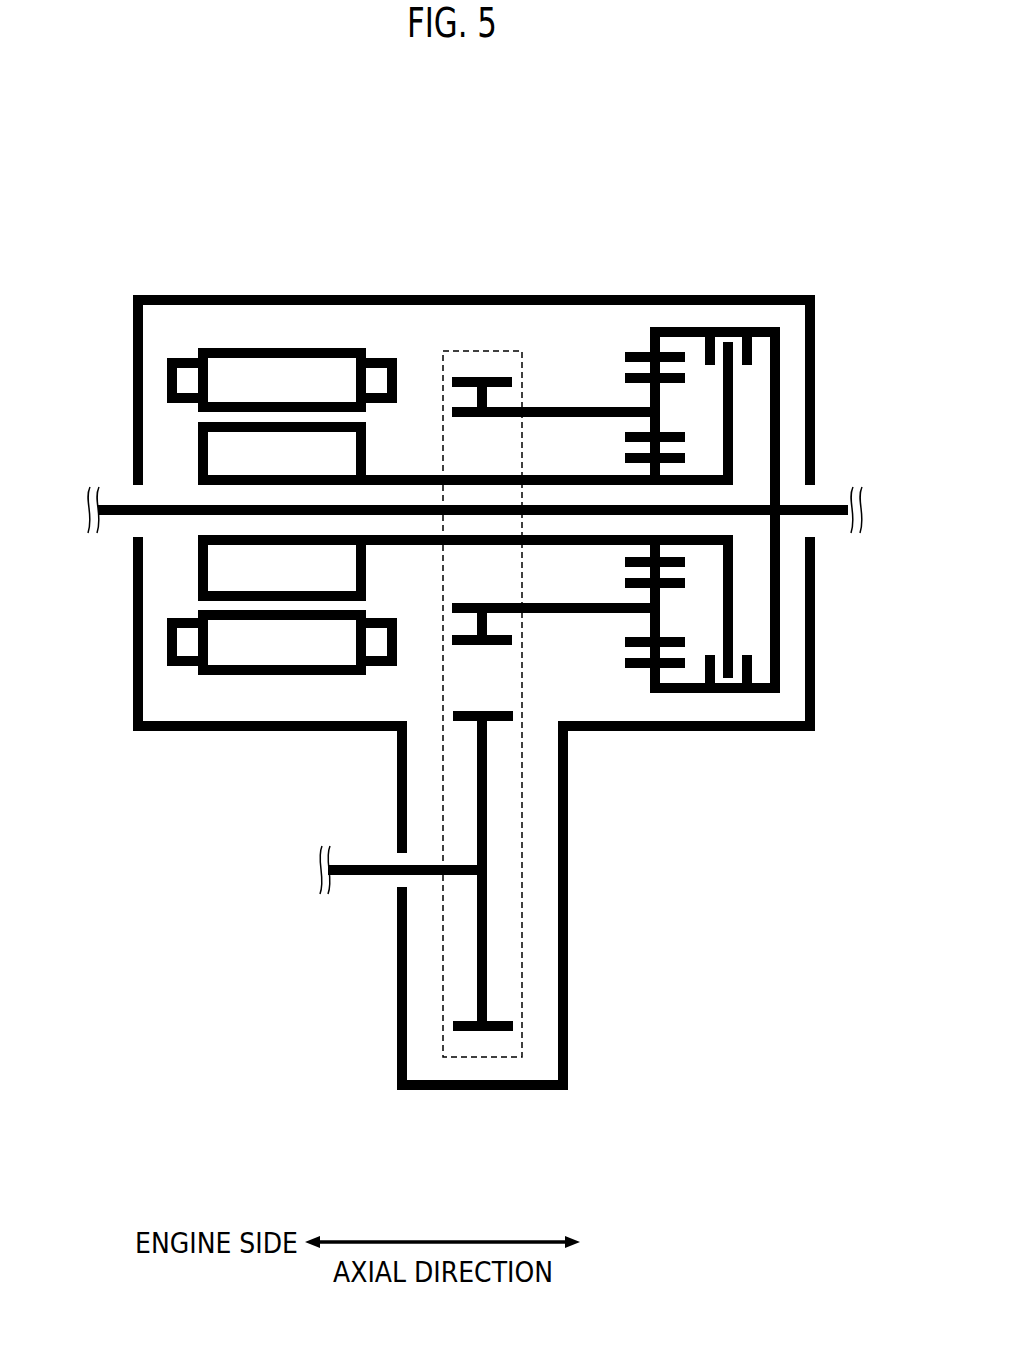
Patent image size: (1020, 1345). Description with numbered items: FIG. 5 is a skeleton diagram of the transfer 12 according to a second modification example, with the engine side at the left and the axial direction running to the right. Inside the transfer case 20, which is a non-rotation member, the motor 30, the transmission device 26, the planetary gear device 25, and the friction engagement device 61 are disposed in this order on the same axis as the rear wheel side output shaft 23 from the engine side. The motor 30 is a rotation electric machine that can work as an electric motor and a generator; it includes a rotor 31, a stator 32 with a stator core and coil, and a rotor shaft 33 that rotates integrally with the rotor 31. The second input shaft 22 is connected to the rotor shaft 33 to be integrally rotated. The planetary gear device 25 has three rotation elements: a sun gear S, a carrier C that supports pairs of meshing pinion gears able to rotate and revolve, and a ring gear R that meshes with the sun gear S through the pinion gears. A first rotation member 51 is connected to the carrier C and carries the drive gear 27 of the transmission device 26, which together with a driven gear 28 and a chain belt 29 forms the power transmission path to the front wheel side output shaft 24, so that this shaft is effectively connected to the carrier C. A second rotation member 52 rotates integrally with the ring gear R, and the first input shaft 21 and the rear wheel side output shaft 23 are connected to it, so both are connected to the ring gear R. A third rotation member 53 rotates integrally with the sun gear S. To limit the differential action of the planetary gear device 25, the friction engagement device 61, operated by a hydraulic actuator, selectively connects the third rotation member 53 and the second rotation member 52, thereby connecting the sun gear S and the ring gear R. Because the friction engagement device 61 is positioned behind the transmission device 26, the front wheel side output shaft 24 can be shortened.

The transfer 12 is at (222, 200).
The transfer case 20 is at (173, 295).
The first input shaft 21 is at (118, 518).
The second input shaft 22 is at (565, 475).
The rear wheel side output shaft 23 is at (828, 518).
The front wheel side output shaft 24 is at (352, 876).
The planetary gear device 25 is at (677, 280).
The transmission device 26 is at (480, 325).
The drive gear 27 is at (462, 377).
The driven gear 28 is at (497, 1032).
The chain belt 29 is at (522, 982).
The motor 30 is at (280, 325).
The rotor 31 is at (226, 453).
The stator 32 is at (230, 367).
The rotor shaft 33 is at (405, 470).
The first rotation member 51 is at (543, 407).
The second rotation member 52 is at (780, 362).
The third rotation member 53 is at (733, 408).
The friction engagement device 61 is at (724, 313).
The ring gear R is at (636, 352).
The sun gear S is at (672, 468).
The carrier C is at (622, 417).